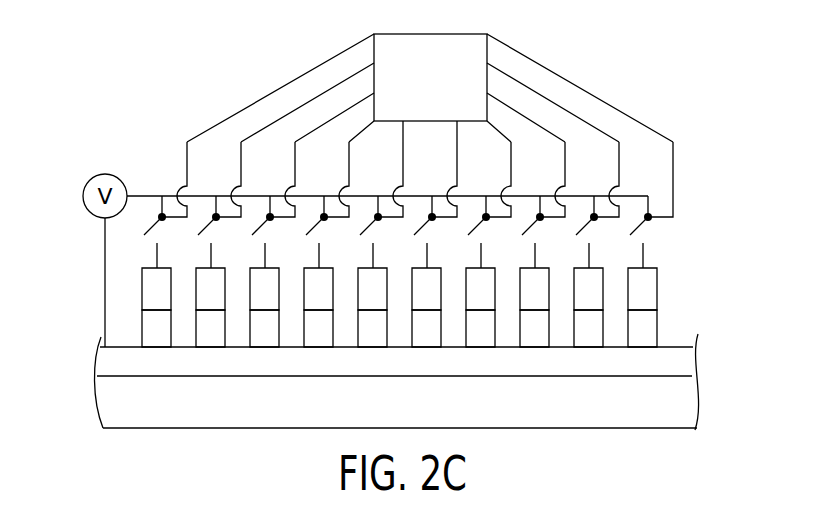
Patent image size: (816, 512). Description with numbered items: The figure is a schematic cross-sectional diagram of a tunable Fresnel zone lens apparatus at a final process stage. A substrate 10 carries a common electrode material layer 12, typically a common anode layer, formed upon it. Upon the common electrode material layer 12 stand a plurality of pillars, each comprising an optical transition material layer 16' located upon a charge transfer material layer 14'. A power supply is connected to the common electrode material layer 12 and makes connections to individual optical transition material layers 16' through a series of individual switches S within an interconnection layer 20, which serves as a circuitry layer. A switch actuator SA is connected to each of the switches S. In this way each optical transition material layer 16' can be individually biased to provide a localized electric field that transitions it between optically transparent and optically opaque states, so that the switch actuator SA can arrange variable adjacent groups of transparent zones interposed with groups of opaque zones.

The switch actuator SA is at (419, 118).
The interconnection layer 20 is at (148, 196).
The switch S is at (656, 234).
The optical transition material layer 16' is at (399, 289).
The charge transfer material layer 14' is at (399, 328).
The common electrode material layer 12 is at (145, 375).
The substrate 10 is at (145, 411).